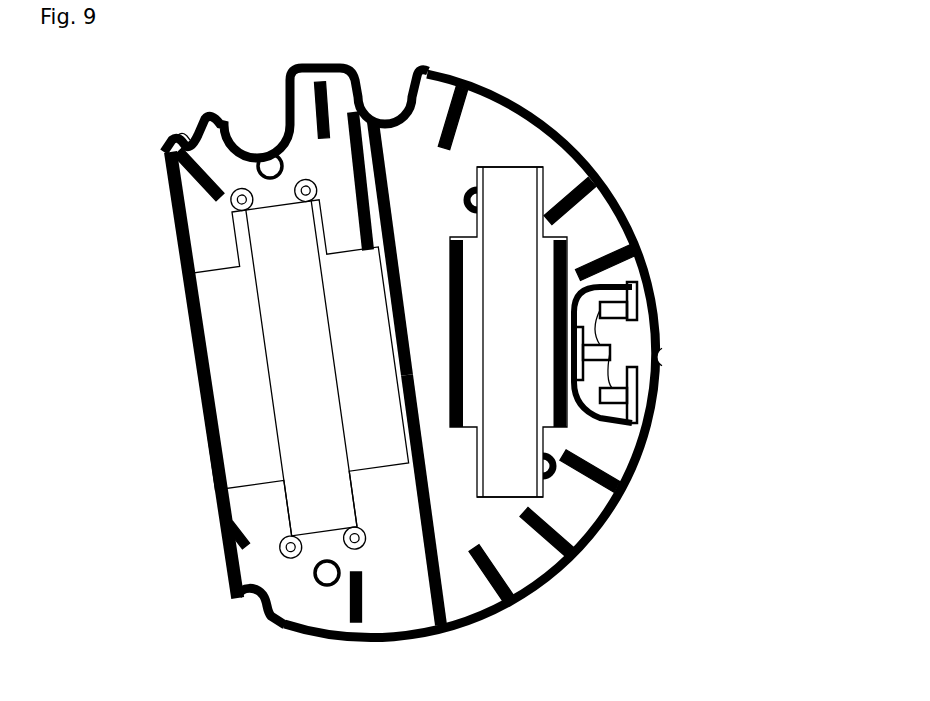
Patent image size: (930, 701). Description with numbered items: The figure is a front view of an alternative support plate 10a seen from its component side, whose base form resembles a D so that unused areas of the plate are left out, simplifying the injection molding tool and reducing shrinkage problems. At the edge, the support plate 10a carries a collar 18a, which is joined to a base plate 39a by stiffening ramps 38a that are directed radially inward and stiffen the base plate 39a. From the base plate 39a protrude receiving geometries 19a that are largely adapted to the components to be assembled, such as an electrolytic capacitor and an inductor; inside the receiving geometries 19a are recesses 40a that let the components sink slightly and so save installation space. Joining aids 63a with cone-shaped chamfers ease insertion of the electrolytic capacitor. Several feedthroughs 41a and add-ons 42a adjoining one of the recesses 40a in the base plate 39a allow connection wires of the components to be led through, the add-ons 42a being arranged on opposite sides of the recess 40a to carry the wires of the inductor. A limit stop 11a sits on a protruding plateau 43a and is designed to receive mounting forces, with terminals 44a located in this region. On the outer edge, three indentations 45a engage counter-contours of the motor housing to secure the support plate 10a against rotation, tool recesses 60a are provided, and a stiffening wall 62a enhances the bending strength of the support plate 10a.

The support plate 10a is at (690, 113).
The stiffening ramps 38a is at (582, 165).
The indentations 45a is at (188, 142).
The tool recesses 60a is at (377, 86).
The feedthroughs 41a is at (268, 158).
The base plate 39a is at (433, 192).
The stiffening wall 62a is at (423, 543).
The receiving geometries 19a is at (474, 312).
The recesses 40a is at (280, 328).
The collar 18a is at (508, 322).
The joining aids 63a is at (304, 193).
The add-ons 42a is at (466, 185).
The plateau 43a is at (610, 430).
The terminal 44a is at (637, 283).
The limit stop 11a is at (605, 352).